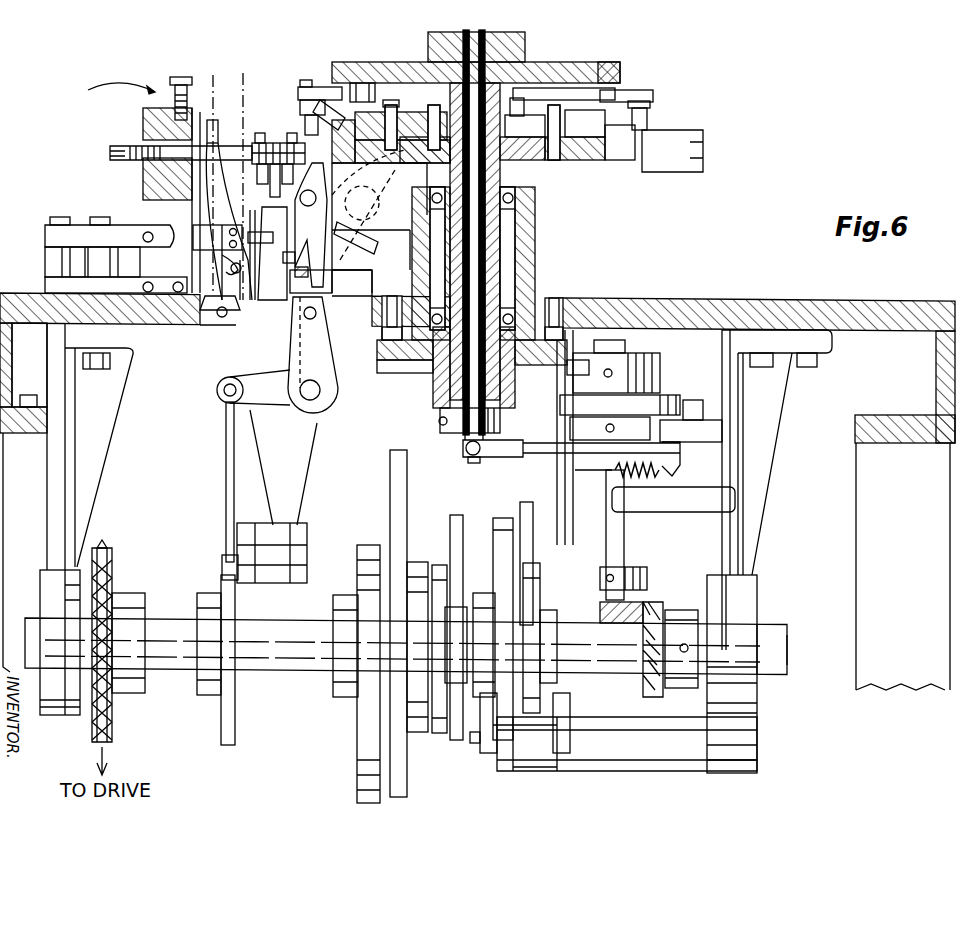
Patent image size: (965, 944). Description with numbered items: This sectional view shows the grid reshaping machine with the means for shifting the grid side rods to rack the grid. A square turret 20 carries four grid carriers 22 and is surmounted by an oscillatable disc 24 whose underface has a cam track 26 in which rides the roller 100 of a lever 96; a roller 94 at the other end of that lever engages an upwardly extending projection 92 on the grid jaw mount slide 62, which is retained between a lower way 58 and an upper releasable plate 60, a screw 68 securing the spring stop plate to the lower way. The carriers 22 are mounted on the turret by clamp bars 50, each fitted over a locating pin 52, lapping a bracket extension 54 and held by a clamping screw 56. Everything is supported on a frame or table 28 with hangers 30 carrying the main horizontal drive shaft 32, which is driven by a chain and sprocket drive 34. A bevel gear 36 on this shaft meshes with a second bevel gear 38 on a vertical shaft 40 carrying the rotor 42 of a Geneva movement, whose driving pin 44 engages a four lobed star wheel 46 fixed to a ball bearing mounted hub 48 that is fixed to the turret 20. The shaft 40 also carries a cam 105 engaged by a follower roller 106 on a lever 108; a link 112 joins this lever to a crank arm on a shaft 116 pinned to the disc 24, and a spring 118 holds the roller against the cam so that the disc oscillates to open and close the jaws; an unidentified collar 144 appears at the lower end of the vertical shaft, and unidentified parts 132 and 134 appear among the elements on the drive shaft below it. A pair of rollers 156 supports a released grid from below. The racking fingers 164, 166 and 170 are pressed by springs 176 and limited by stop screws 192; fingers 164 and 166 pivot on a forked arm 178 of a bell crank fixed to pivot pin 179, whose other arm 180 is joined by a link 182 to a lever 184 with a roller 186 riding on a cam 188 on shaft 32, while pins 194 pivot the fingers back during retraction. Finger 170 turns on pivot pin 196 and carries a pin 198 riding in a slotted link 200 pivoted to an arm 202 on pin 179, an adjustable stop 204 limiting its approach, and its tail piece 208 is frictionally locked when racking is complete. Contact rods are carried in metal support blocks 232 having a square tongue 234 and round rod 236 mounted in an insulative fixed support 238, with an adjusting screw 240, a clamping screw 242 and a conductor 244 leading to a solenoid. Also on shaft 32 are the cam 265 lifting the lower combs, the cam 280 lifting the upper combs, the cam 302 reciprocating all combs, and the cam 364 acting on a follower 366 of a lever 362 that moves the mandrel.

The square turret 20 is at (560, 205).
The grid carriers 22 is at (262, 128).
The oscillatable plate or disc 24 is at (590, 62).
The cam track 26 is at (622, 74).
The frame or table 28 is at (718, 294).
The hangers 30 is at (96, 500).
The main horizontal drive shaft 32 is at (787, 660).
The chain and sprocket drive 34 is at (85, 723).
The bevel gear 36 is at (663, 608).
The second bevel gear 38 is at (648, 580).
The vertical shaft 40 is at (624, 558).
The rotor of Geneva movement 42 is at (655, 355).
The driving pin 44 is at (496, 424).
The four lobed star wheel 46 is at (410, 373).
The ball bearing mounted hub 48 is at (520, 248).
The clamp bars 50 is at (535, 160).
The locating pin 52 is at (520, 98).
The bracket extension 54 is at (566, 160).
The clamping screw 56 is at (410, 112).
The lower way 58 is at (622, 165).
The upper releasable plate 60 is at (620, 110).
The grid jaw mount slide 62 is at (676, 172).
The screw 68 is at (602, 160).
The upwardly extending projection 92 is at (647, 120).
The roller 94 is at (300, 87).
The lever 96 is at (395, 100).
The roller 100 is at (360, 52).
The cam 105 is at (662, 395).
The follower roller 106 is at (692, 400).
The lever 108 is at (700, 425).
The link 112 is at (538, 460).
The shaft 116 is at (440, 50).
The spring 118 is at (616, 475).
The lower shaft 132 is at (520, 760).
The gear 134 is at (540, 575).
The collar 144 is at (440, 420).
The rollers 156 is at (269, 253).
The finger 164 is at (379, 221).
The finger 166 is at (336, 152).
The finger 170 is at (216, 198).
The springs 176 is at (230, 262).
The forked arm 178 is at (333, 308).
The pivot pin 179 is at (322, 393).
The arm 180 is at (272, 399).
The link 182 is at (226, 482).
The lever 184 is at (245, 583).
The roller 186 is at (224, 555).
The cam 188 is at (228, 745).
The stop screws 192 is at (355, 275).
The pins 194 is at (372, 238).
The pivot pin 196 is at (238, 275).
The pins 198 is at (228, 325).
The links 200 is at (313, 355).
The arm 202 is at (328, 371).
The adjustable stop 204 is at (283, 275).
The tail piece 208 is at (225, 245).
The metal support blocks 232 is at (213, 140).
The square tongue 234 is at (143, 125).
The round rod 236 is at (143, 180).
The fixed support 238 is at (140, 208).
The adjusting screw 240 is at (110, 153).
The clamping screw 242 is at (180, 77).
The conductor 244 is at (121, 75).
The cam 265 is at (410, 722).
The cam 280 is at (503, 518).
The cam 302 is at (450, 745).
The lever 362 is at (407, 497).
The cam 364 is at (357, 783).
The follower 366 is at (333, 640).